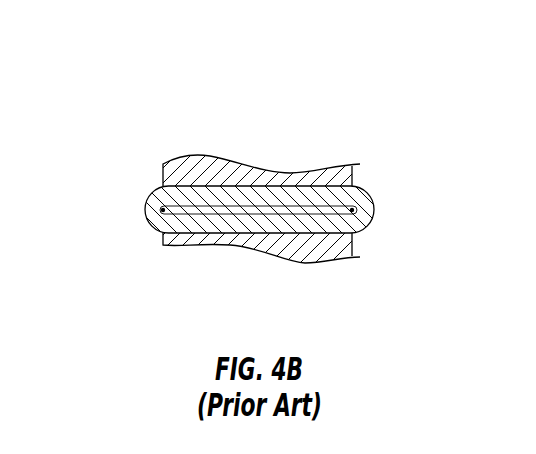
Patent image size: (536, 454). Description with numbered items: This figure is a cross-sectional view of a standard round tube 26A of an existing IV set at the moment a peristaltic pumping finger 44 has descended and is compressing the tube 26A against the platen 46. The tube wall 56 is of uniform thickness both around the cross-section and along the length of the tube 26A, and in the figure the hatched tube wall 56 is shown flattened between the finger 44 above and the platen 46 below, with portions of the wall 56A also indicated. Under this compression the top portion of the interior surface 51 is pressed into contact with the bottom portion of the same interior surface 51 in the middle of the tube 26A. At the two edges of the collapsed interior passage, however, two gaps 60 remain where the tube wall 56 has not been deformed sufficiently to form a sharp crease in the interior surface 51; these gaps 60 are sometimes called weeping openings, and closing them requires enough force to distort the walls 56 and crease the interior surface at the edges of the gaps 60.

The tube 26A is at (140, 225).
The finger 44 is at (185, 183).
The platen 46 is at (163, 246).
The interior surface 51 is at (256, 206).
The tube wall 56 is at (197, 158).
The fiber strand 56A is at (320, 268).
The gaps 60 is at (148, 200).